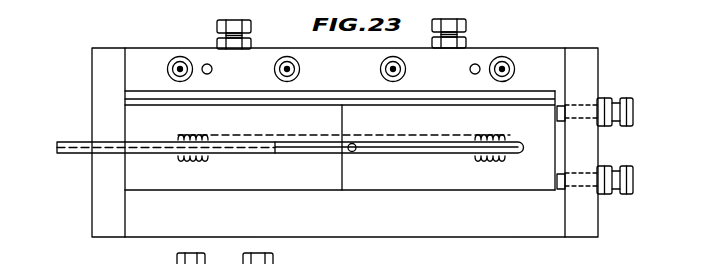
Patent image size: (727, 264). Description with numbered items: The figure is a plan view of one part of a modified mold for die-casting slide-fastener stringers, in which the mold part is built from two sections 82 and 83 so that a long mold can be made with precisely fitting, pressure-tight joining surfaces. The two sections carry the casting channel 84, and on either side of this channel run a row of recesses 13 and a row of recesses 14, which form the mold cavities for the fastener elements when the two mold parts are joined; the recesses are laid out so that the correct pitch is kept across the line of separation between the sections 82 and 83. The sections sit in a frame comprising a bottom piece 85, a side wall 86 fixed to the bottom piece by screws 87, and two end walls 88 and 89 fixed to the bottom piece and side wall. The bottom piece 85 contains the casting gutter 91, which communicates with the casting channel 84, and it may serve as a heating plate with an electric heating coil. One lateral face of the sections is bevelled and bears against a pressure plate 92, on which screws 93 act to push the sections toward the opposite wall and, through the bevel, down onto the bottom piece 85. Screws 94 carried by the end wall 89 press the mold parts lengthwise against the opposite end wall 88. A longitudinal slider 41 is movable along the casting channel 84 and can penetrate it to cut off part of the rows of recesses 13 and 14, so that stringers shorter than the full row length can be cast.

The row of recesses 13 is at (195, 163).
The row of recesses 14 is at (200, 133).
The longitudinal slider 41 is at (62, 141).
The mold section 82 is at (242, 187).
The mold section 83 is at (415, 188).
The casting channel 84 is at (412, 147).
The bottom piece 85 is at (413, 230).
The side wall 86 is at (265, 48).
The screws 87 is at (178, 62).
The end wall 88 is at (98, 180).
The end wall 89 is at (584, 230).
The casting gutter 91 is at (355, 143).
The pressure plate 92 is at (518, 97).
The screws 93 is at (217, 26).
The screws 94 is at (610, 167).